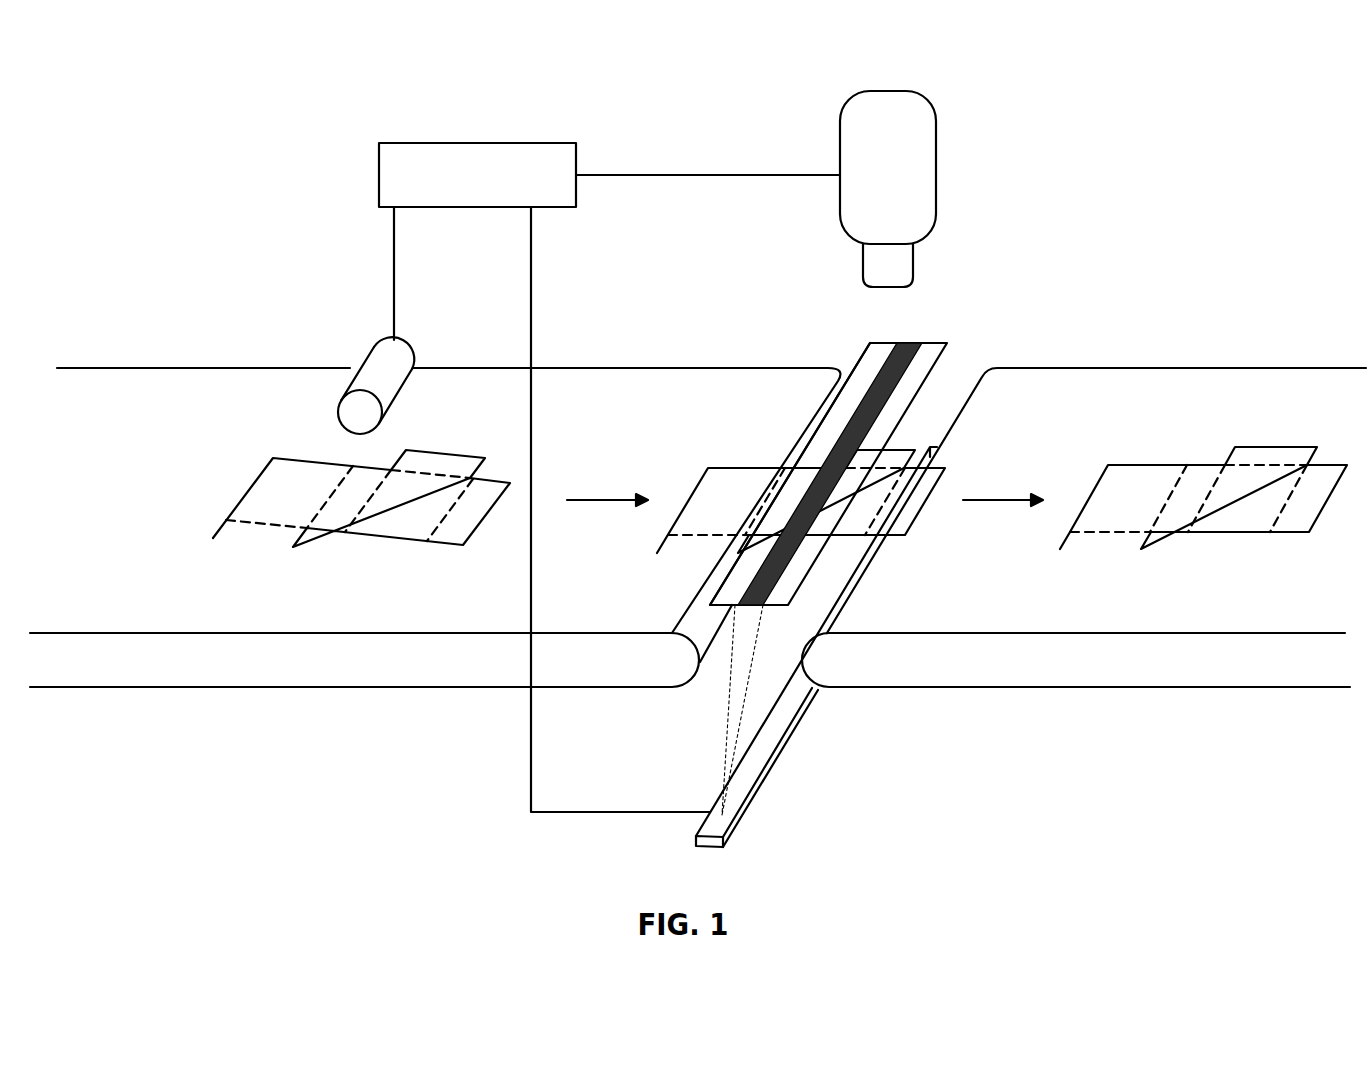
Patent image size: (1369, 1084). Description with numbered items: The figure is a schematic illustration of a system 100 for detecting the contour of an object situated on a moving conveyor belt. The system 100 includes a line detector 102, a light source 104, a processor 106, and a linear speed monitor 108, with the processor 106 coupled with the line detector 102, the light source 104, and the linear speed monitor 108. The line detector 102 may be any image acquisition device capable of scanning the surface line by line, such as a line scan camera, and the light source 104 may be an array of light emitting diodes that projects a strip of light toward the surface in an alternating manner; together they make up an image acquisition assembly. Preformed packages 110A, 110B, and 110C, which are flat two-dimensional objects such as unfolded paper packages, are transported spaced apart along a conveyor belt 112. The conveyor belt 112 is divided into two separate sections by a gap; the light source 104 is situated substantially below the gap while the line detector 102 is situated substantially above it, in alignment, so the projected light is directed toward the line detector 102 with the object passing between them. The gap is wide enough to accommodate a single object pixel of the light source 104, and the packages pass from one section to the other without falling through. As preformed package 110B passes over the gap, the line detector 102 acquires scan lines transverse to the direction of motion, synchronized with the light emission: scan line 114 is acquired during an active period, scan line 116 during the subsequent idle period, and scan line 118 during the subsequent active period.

The system 100 is at (247, 103).
The line detector 102 is at (938, 111).
The light source 104 is at (738, 826).
The processor 106 is at (431, 143).
The linear speed monitor 108 is at (372, 346).
The preformed package 110A is at (270, 460).
The preformed package 110B is at (735, 468).
The preformed package 110C is at (1147, 465).
The conveyor belt 112 is at (163, 690).
The scan line 114 is at (935, 343).
The scan line 116 is at (906, 343).
The scan line 118 is at (878, 343).